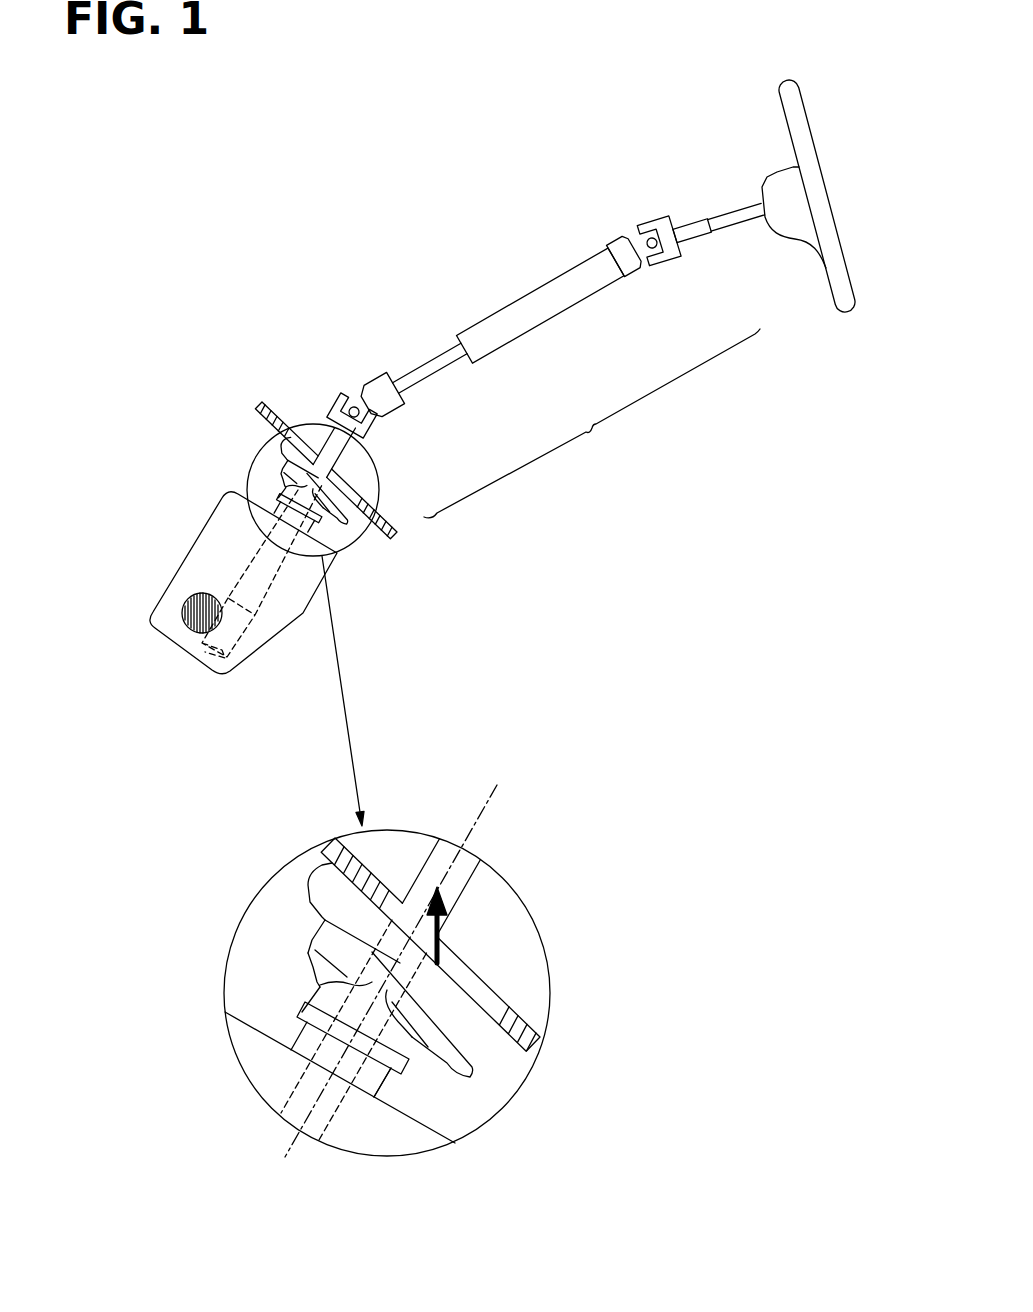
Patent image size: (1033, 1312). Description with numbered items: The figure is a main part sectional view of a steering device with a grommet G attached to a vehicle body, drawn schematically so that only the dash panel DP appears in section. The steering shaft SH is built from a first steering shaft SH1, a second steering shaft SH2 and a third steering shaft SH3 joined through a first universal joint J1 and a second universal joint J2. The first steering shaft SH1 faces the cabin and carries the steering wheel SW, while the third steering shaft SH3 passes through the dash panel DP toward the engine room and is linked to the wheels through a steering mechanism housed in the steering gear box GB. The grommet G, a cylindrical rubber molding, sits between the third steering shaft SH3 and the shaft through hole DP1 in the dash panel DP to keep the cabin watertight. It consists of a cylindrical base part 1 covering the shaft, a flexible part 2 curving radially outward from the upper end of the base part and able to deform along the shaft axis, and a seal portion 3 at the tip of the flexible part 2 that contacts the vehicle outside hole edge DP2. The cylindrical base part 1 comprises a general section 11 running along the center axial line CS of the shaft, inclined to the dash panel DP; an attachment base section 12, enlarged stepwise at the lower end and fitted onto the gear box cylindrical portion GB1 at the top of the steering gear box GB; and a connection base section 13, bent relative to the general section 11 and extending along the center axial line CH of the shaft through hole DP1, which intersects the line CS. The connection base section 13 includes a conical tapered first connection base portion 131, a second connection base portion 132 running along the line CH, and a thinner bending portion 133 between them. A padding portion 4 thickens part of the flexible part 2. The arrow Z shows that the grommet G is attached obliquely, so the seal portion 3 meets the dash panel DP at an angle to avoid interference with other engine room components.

The steering wheel SW is at (789, 86).
The steering shaft SH is at (592, 423).
The first steering shaft SH1 is at (733, 232).
The second steering shaft SH2 is at (513, 340).
The third steering shaft SH3 is at (345, 447).
The first universal joint J1 is at (642, 199).
The second universal joint J2 is at (344, 376).
The grommet G is at (241, 445).
The steering gear box GB is at (302, 855).
The gear box cylindrical portion GB1 is at (393, 1100).
The dash panel DP is at (443, 762).
The shaft through hole DP1 is at (268, 415).
The vehicle outside hole edge DP2 is at (384, 538).
The center axial line of the third steering shaft CS is at (502, 822).
The center axial line of the shaft through hole CH is at (458, 935).
The arrow Z is at (446, 925).
The cylindrical base part 1 is at (224, 950).
The flexible part 2 is at (506, 1062).
The seal portion 3 is at (368, 842).
The padding portion 4 is at (311, 872).
The general section 11 is at (318, 985).
The attachment base section 12 is at (235, 1061).
The connection base section 13 is at (240, 928).
The first connection base portion 131 is at (313, 972).
The second connection base portion 132 is at (316, 927).
The bending portion 133 is at (310, 950).